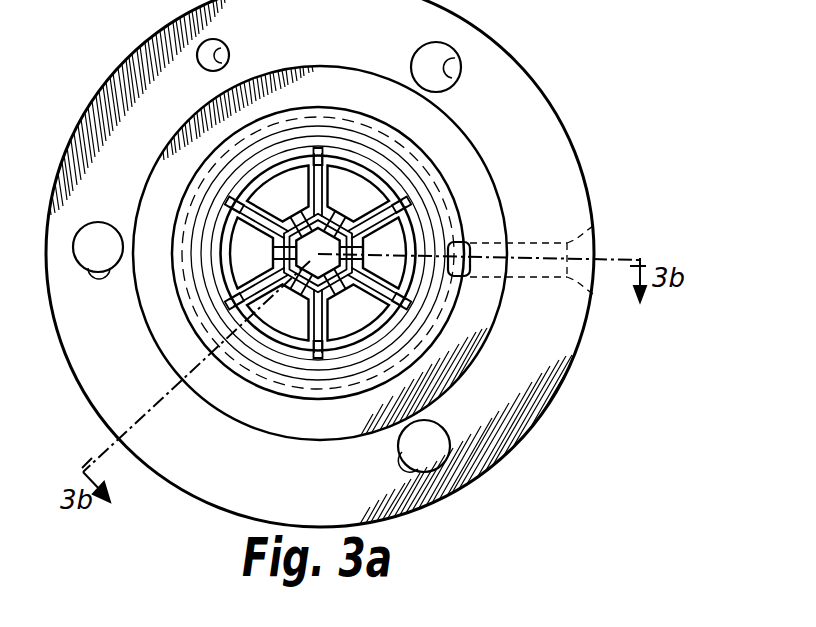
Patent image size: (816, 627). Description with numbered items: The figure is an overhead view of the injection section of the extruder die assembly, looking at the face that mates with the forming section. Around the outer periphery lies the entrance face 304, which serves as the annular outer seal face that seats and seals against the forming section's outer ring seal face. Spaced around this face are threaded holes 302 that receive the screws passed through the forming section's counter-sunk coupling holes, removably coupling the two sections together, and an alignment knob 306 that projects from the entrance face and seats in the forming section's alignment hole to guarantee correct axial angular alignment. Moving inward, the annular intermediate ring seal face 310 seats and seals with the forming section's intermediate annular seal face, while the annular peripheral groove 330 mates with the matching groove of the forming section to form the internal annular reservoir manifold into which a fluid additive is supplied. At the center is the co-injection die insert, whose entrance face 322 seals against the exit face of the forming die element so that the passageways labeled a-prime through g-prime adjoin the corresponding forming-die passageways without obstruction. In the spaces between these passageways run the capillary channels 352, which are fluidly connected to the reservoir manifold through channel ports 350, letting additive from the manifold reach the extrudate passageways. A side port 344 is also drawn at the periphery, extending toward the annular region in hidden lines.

The threaded holes 302 is at (460, 78).
The entrance face 304 is at (542, 100).
The alignment knob 306 is at (228, 45).
The annular intermediate ring seal face 310 is at (347, 77).
The entrance face of co-injection die insert 322 is at (480, 167).
The annular peripheral groove 330 is at (277, 390).
The side port 344 is at (463, 232).
The channel ports 350 is at (167, 355).
The capillary channels 352 is at (380, 192).